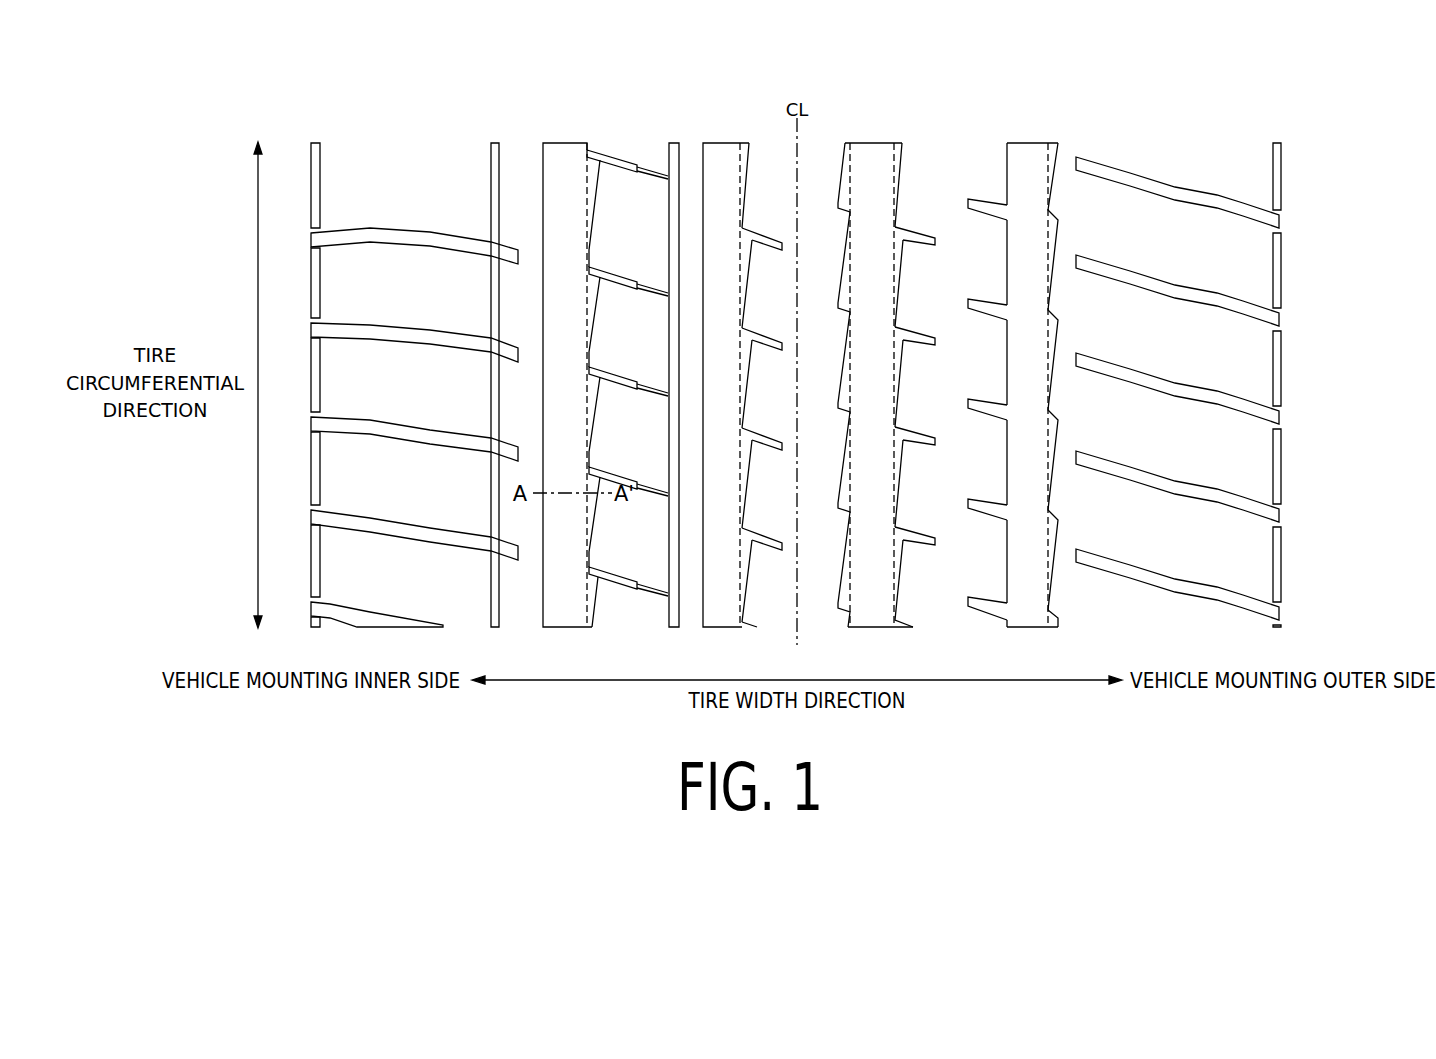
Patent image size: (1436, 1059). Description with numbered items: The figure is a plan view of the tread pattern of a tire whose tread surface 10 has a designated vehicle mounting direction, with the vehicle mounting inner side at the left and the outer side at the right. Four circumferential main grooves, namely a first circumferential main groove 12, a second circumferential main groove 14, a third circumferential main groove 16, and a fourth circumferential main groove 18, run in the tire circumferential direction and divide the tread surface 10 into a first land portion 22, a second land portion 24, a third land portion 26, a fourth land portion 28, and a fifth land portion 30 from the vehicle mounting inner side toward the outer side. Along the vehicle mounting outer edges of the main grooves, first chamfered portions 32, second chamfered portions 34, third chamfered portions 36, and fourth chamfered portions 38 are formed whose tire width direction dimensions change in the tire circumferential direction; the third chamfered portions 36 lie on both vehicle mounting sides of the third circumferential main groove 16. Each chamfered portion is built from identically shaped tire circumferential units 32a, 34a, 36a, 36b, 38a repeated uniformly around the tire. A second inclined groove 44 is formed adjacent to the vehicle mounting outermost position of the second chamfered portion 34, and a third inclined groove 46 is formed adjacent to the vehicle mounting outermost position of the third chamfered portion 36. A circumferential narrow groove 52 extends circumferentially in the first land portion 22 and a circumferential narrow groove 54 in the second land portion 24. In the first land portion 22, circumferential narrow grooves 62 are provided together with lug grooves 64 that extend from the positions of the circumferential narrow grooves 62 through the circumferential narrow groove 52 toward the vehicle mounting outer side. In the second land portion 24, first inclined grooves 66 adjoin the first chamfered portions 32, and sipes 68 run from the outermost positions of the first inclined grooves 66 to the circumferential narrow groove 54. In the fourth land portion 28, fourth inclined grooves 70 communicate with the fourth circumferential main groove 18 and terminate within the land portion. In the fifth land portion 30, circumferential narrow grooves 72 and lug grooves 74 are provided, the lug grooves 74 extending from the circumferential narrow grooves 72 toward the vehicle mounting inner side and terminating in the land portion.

The tread surface 10 is at (831, 91).
The first circumferential main groove 12 is at (557, 150).
The second circumferential main groove 14 is at (718, 155).
The third circumferential main groove 16 is at (873, 155).
The fourth circumferential main groove 18 is at (1030, 155).
The first land portion 22 is at (384, 392).
The second land portion 24 is at (629, 364).
The third land portion 26 is at (804, 252).
The fourth land portion 28 is at (958, 352).
The fifth land portion 30 is at (1198, 362).
The first chamfered portions 32 is at (625, 393).
The tire circumferential unit 32a is at (596, 170).
The second chamfered portions 34 is at (770, 432).
The tire circumferential unit 34a is at (745, 247).
The third chamfered portions 36 is at (901, 373).
The tire circumferential unit 36a is at (903, 150).
The tire circumferential unit 36b is at (845, 192).
The fourth chamfered portions 38 is at (1115, 385).
The tire circumferential unit 38a is at (1062, 223).
The second inclined groove 44 is at (762, 232).
The third inclined groove 46 is at (920, 236).
The circumferential narrow groove 52 is at (495, 143).
The circumferential narrow groove 54 is at (674, 143).
The circumferential narrow grooves 62 is at (317, 180).
The lug grooves 64 is at (408, 235).
The first inclined grooves 66 is at (612, 157).
The sipes 68 is at (652, 172).
The fourth inclined grooves 70 is at (987, 203).
The circumferential narrow grooves 72 is at (1272, 157).
The lug grooves 74 is at (1142, 185).